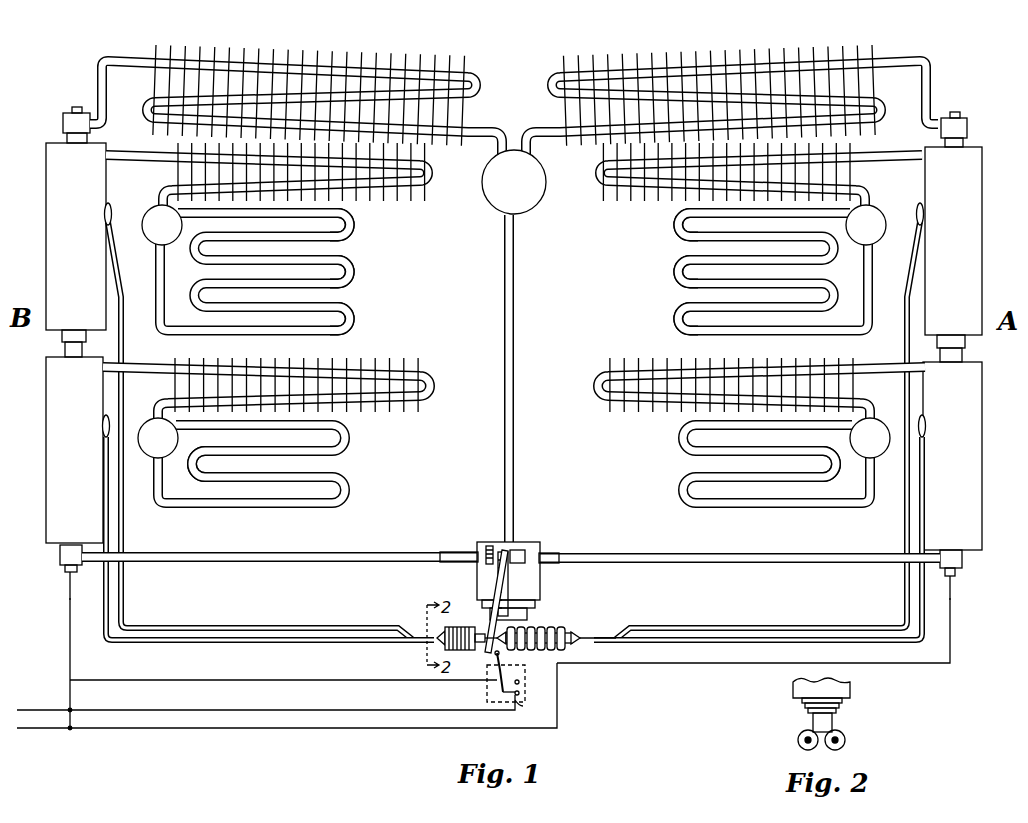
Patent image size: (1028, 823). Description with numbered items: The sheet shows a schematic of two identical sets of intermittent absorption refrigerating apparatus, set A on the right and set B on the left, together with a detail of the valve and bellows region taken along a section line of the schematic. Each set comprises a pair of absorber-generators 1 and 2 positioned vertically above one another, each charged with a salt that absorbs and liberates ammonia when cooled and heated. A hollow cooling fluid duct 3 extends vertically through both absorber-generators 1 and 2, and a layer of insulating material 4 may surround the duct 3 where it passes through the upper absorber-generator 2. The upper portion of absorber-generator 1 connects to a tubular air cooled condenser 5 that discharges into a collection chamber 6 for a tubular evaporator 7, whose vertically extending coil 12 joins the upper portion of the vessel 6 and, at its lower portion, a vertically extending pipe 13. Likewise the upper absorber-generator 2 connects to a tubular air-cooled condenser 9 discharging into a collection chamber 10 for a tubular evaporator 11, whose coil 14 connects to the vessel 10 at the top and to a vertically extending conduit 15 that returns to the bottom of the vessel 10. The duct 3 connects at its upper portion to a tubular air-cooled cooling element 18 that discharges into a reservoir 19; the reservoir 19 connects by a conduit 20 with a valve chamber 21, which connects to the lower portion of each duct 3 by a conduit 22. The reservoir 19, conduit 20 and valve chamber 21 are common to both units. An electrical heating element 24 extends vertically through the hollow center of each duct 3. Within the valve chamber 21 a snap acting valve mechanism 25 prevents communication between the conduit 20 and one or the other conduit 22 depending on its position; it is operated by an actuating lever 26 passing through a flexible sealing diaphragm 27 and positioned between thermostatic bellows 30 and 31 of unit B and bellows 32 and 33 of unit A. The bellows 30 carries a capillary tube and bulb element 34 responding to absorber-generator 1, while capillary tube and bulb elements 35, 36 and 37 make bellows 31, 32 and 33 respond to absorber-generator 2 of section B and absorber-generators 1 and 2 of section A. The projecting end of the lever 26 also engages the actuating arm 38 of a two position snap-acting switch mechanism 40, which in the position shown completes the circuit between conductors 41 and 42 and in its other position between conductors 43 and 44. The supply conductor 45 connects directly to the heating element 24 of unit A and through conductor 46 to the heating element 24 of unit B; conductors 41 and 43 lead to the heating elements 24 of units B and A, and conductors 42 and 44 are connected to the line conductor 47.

In FIG. 1, the absorber-generator 1 is at (514, 453).
In FIG. 1, the absorber-generator 2 is at (514, 239).
In FIG. 1, the cooling fluid duct 3 is at (65, 118).
In FIG. 1, the layer of insulating material 4 is at (66, 137).
In FIG. 1, the tubular air cooled condenser 5 is at (367, 357).
In FIG. 1, the collection chamber 6 is at (514, 438).
In FIG. 1, the tubular evaporator 7 is at (205, 482).
In FIG. 1, the tubular air-cooled condenser 9 is at (386, 199).
In FIG. 1, the collection chamber 10 is at (514, 225).
In FIG. 1, the tubular evaporator 11 is at (210, 262).
In FIG. 1, the vertically extending coil 12 is at (338, 472).
In FIG. 1, the vertically extending pipe 13 is at (153, 486).
In FIG. 1, the vertically extending coil 14 is at (343, 250).
In FIG. 1, the vertically extending conduit 15 is at (157, 293).
In FIG. 1, the tubular air-cooled cooling element 18 is at (150, 103).
In FIG. 1, the reservoir 19 is at (514, 182).
In FIG. 1, the conduit 20 is at (516, 404).
In FIG. 1, the valve chamber 21 is at (538, 544).
In FIG. 2, the valve chamber 21 is at (852, 688).
In FIG. 1, the conduit 22 is at (308, 556).
In FIG. 1, the electrical heating element 24 is at (67, 575).
In FIG. 1, the snap acting valve mechanism 25 is at (492, 548).
In FIG. 1, the actuating lever 26 is at (486, 655).
In FIG. 2, the actuating lever 26 is at (834, 722).
In FIG. 1, the flexible sealing diaphragm 27 is at (510, 582).
In FIG. 2, the flexible sealing diaphragm 27 is at (800, 712).
In FIG. 1, the thermostatic bellows 30 is at (443, 627).
In FIG. 2, the thermostatic bellows 30 is at (846, 742).
In FIG. 1, the thermostatic bellows 31 is at (471, 630).
In FIG. 2, the thermostatic bellows 31 is at (797, 742).
In FIG. 1, the bellows 32 is at (534, 630).
In FIG. 1, the bellows 33 is at (591, 627).
In FIG. 1, the capillary tube and bulb element 34 is at (105, 430).
In FIG. 1, the capillary tube and bulb element 35 is at (112, 213).
In FIG. 1, the capillary tube and bulb element 36 is at (924, 434).
In FIG. 1, the capillary tube and bulb element 37 is at (918, 212).
In FIG. 1, the actuating arm 38 is at (507, 660).
In FIG. 1, the two position snap-acting switch mechanism 40 is at (525, 692).
In FIG. 1, the conductor 41 is at (356, 680).
In FIG. 1, the conductor 42 is at (489, 702).
In FIG. 1, the conductor 43 is at (650, 665).
In FIG. 1, the conductor 44 is at (520, 712).
In FIG. 1, the supply conductor 45 is at (430, 732).
In FIG. 1, the conductor 46 is at (68, 640).
In FIG. 1, the line conductor 47 is at (308, 710).